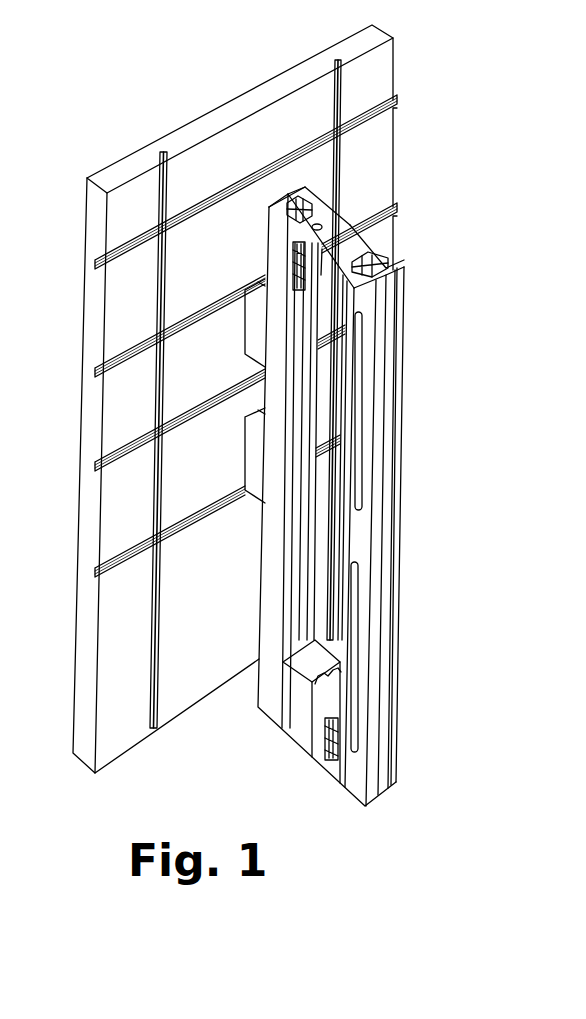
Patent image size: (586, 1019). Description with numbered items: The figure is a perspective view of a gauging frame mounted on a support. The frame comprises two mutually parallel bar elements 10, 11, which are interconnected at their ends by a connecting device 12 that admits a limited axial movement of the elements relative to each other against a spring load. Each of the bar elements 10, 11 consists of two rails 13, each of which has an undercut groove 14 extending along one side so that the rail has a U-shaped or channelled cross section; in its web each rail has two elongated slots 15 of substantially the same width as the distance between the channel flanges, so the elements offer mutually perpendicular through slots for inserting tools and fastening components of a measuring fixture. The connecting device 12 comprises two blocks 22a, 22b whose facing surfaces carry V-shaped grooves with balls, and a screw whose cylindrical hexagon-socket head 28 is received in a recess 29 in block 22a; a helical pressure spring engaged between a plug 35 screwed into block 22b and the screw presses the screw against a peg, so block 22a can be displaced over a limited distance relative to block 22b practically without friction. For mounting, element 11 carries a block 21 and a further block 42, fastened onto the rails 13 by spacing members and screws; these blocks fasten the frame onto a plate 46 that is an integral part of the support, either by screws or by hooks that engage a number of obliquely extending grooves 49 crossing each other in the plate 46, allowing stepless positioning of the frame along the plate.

The bar element 10 is at (329, 500).
The bar element 11 is at (322, 500).
The connecting device 12 is at (372, 235).
The rail 13 is at (288, 203).
The undercut groove 14 is at (312, 208).
The elongated slot 15 is at (360, 484).
The block 21 is at (248, 333).
The block 22a is at (375, 250).
The block 22b is at (335, 196).
The screw head 28 is at (322, 752).
The recess 29 is at (293, 251).
The plug 35 is at (310, 228).
The block 42 is at (246, 457).
The plate 46 is at (80, 527).
The groove 49 is at (168, 181).